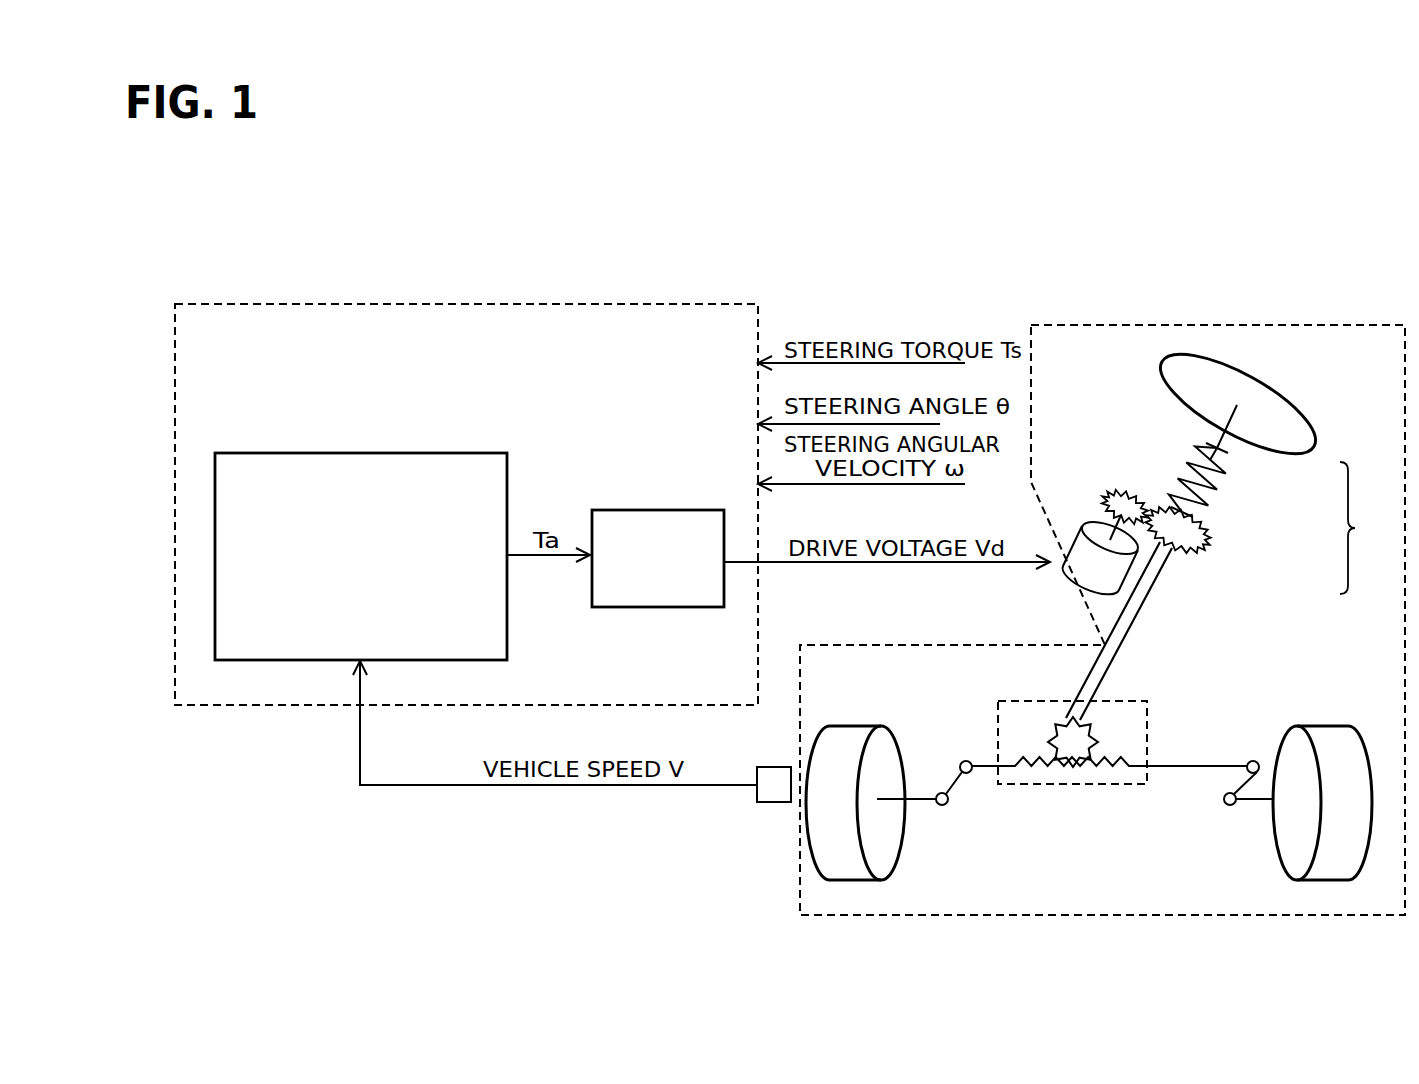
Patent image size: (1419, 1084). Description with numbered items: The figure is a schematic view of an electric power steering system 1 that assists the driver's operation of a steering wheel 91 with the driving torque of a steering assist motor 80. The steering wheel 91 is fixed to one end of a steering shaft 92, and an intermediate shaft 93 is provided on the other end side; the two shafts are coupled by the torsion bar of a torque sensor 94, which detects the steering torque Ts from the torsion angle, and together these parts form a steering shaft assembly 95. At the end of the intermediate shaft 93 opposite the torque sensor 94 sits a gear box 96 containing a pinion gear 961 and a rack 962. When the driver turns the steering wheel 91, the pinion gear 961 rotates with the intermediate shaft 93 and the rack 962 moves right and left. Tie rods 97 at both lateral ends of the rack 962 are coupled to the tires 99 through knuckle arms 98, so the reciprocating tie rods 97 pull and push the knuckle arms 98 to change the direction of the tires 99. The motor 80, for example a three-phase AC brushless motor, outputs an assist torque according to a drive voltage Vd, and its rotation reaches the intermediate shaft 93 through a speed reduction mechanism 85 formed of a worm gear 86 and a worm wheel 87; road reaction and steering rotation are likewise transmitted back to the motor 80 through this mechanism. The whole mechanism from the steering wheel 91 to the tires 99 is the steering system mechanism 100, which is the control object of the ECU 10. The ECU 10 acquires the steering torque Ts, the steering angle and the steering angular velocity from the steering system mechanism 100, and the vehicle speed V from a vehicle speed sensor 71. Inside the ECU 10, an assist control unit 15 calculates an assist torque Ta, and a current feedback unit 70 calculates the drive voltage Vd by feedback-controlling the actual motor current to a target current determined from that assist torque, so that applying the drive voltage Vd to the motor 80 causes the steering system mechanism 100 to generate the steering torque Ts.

The electric power steering system 1 is at (981, 248).
The ECU 10 is at (467, 302).
The assist control unit 15 is at (361, 452).
The current feedback unit 70 is at (664, 509).
The vehicle speed sensor 71 is at (772, 808).
The steering assist motor 80 is at (1080, 583).
The speed reduction mechanism 85 is at (1134, 460).
The worm gear 86 is at (1118, 496).
The worm wheel 87 is at (1165, 518).
The steering wheel 91 is at (1305, 420).
The steering shaft 92 is at (1230, 441).
The intermediate shaft 93 is at (1163, 567).
The torque sensor 94 is at (1223, 483).
The steering shaft assembly 95 is at (1363, 528).
The gear box 96 is at (1081, 744).
The pinion gear 961 is at (1061, 720).
The rack 962 is at (1103, 765).
The tie rod 97 is at (982, 772).
The knuckle arm 98 is at (923, 803).
The tire 99 is at (848, 737).
The steering system mechanism 100 is at (1224, 324).